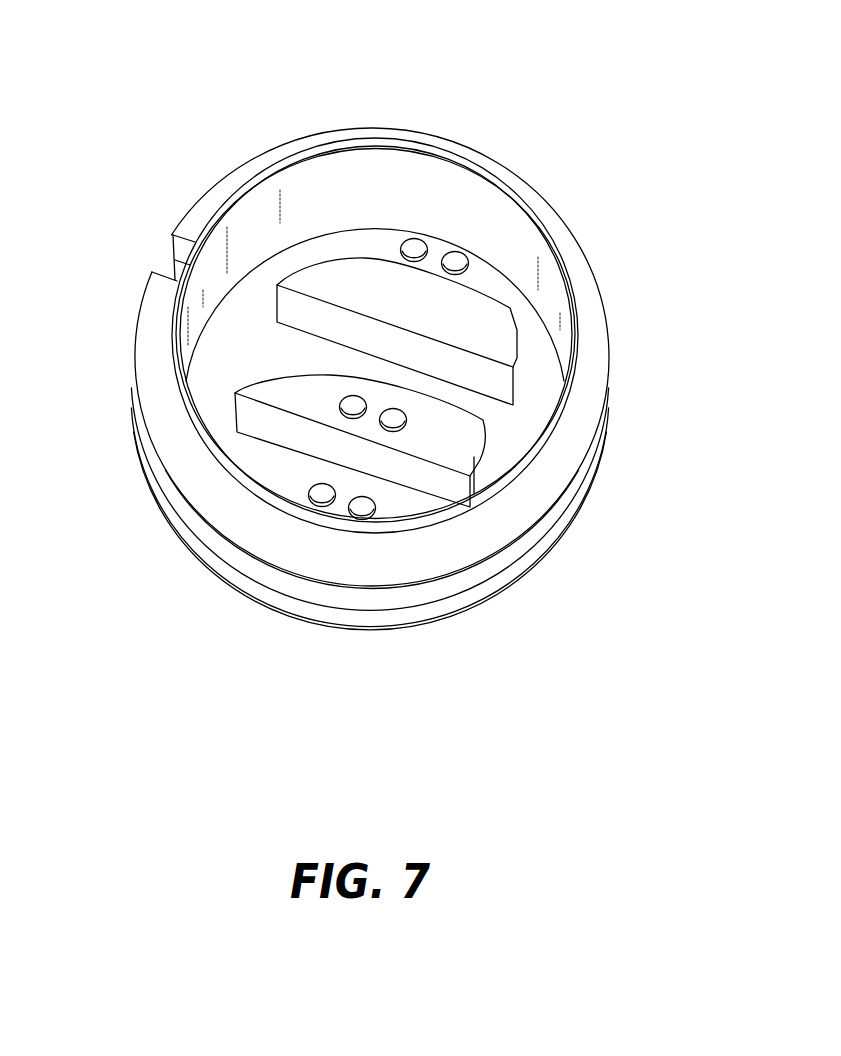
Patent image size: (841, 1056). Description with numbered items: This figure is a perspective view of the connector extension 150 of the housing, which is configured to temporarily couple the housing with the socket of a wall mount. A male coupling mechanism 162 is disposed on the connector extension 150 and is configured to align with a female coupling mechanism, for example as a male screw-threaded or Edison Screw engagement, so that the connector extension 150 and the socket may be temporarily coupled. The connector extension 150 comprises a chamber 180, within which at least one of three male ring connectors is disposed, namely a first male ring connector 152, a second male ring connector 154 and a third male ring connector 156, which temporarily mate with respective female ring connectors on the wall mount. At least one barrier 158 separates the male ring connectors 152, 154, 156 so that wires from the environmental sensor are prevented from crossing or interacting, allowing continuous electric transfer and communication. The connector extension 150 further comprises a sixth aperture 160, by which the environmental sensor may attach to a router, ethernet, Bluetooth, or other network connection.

The connector extension 150 is at (129, 35).
The first male ring connector 152 is at (440, 253).
The second male ring connector 154 is at (337, 507).
The third male ring connector 156 is at (377, 412).
The barrier 158 is at (355, 292).
The sixth aperture 160 is at (175, 258).
The male coupling mechanism 162 is at (150, 451).
The chamber 180 is at (248, 292).